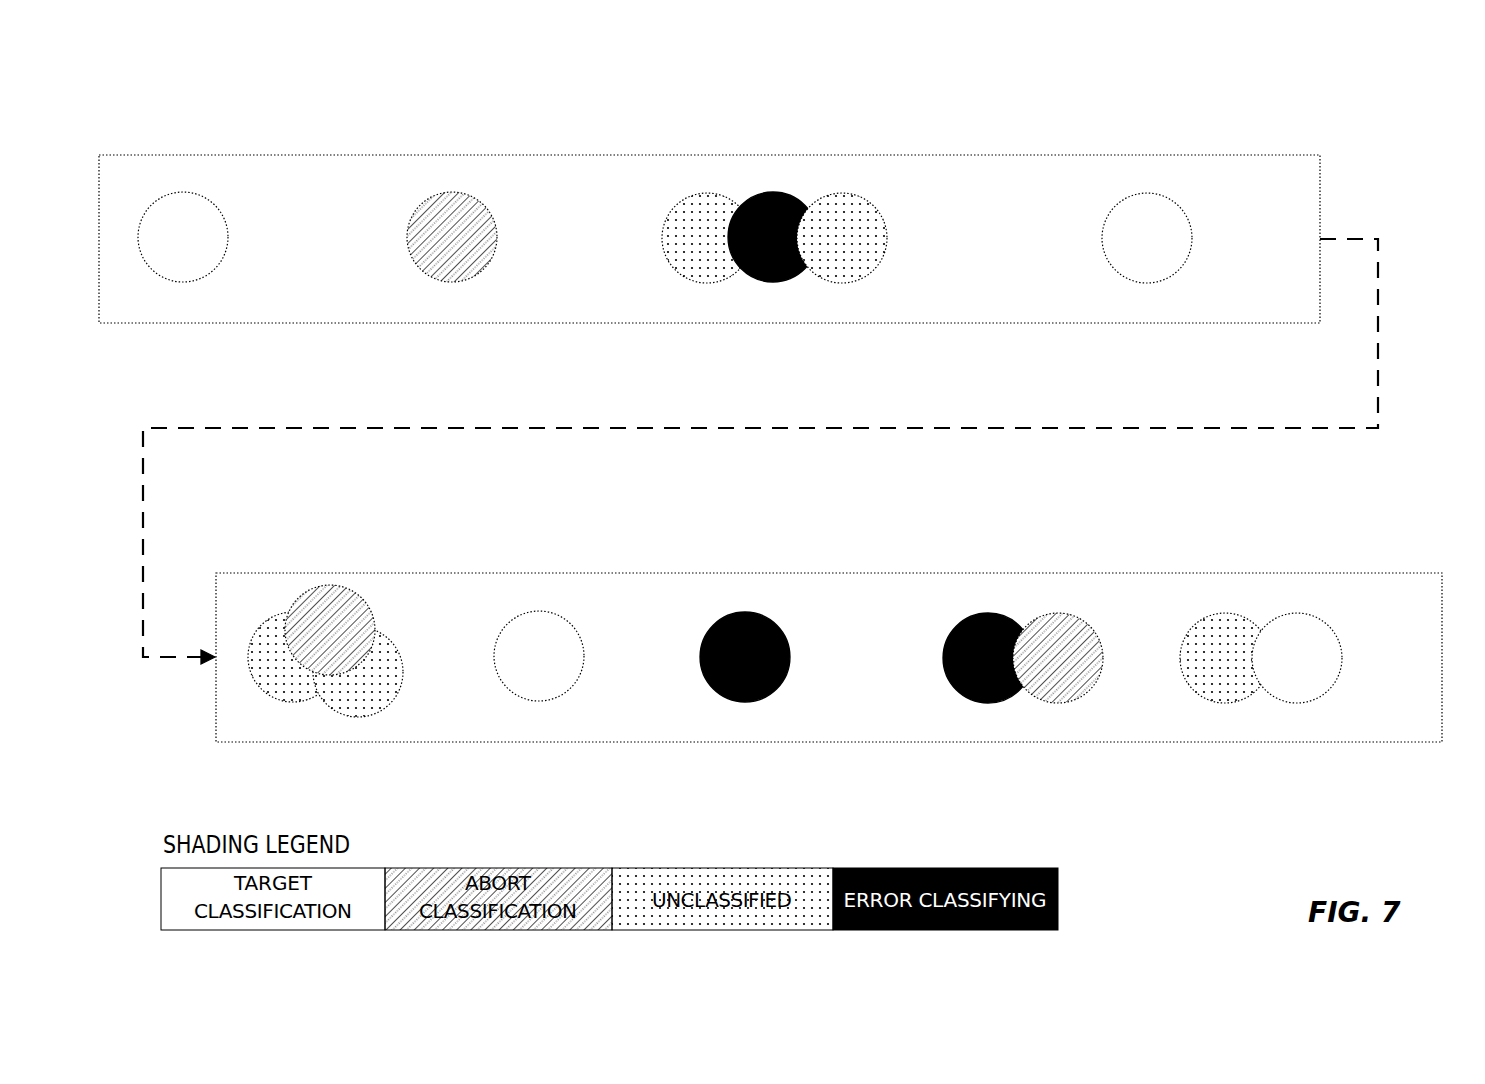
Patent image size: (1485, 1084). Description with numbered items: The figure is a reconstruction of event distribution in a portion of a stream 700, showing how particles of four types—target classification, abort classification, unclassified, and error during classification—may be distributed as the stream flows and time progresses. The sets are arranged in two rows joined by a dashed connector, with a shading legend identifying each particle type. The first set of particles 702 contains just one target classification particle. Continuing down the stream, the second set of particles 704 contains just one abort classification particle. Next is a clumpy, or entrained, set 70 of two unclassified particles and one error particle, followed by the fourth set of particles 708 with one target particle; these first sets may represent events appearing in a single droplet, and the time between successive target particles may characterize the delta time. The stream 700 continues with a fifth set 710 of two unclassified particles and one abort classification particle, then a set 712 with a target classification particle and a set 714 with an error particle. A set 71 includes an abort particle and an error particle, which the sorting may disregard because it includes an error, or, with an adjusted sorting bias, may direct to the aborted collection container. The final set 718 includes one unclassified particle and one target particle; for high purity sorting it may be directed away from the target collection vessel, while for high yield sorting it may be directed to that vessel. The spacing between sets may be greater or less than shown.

The stream 700 is at (1380, 108).
The first set of particles 702 is at (234, 185).
The second set of particles 704 is at (504, 185).
The object cluster with unclassified and error classifying objects 70 is at (912, 185).
The fourth set of particles 708 is at (1199, 185).
The object cluster with unclassified and abort classification objects 710 is at (407, 607).
The set 712 is at (592, 607).
The set 714 is at (797, 607).
The object cluster with error classifying and abort classification objects 71 is at (1100, 607).
The set 718 is at (1350, 607).